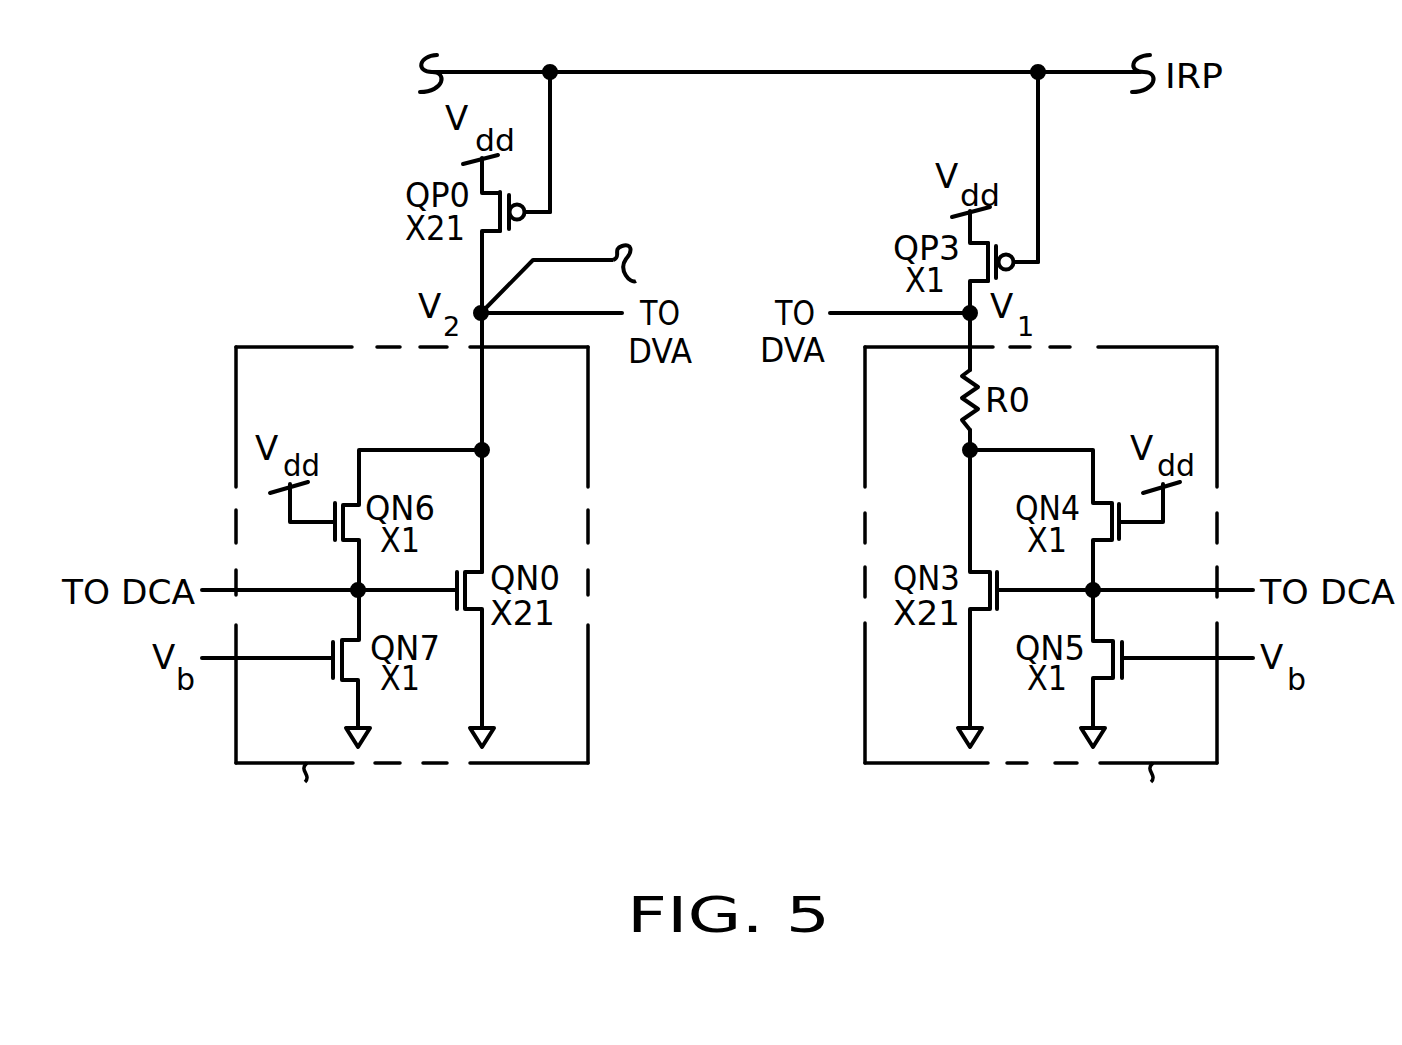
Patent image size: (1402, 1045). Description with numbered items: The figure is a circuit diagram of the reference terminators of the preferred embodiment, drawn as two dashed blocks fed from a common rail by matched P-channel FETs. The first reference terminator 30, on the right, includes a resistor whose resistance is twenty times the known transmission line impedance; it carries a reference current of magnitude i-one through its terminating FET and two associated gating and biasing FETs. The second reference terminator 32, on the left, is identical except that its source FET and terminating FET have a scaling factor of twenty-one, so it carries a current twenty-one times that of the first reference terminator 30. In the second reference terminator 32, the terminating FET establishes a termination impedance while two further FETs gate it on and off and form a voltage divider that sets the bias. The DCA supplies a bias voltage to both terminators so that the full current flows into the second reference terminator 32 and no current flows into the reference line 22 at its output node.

The reference line 22 is at (558, 263).
The first reference terminator 30 is at (1041, 585).
The second reference terminator 32 is at (412, 585).